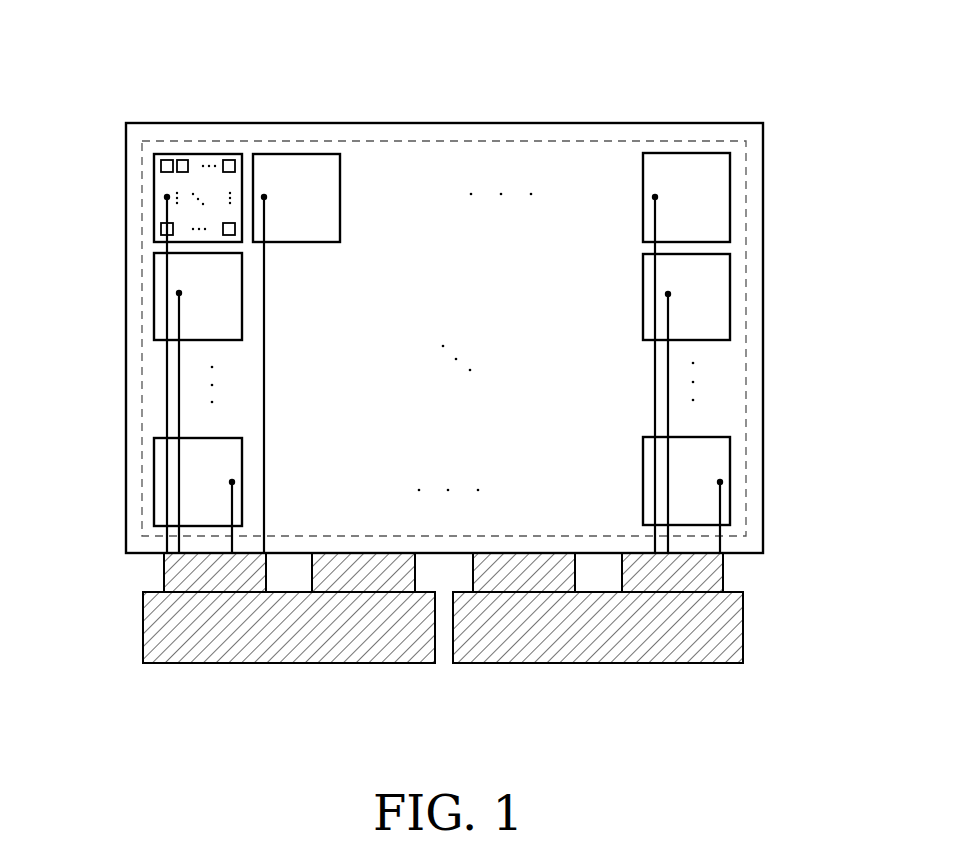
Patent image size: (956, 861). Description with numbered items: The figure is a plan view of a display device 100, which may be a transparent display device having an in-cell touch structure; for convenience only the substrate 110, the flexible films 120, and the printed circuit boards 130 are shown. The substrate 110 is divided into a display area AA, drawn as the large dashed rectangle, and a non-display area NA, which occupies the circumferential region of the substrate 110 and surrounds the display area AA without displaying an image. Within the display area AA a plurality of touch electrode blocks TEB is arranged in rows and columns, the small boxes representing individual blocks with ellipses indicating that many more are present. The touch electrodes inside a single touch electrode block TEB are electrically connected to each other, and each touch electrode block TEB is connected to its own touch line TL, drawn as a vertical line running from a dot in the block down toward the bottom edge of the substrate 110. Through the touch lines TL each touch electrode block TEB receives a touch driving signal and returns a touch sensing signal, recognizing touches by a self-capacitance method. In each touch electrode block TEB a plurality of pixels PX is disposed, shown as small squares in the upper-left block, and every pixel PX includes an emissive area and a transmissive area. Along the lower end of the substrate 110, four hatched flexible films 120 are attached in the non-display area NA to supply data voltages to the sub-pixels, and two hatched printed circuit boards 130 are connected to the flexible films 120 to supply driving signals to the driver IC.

The display device 100 is at (718, 36).
The substrate 110 is at (763, 327).
The flexible film 120 is at (360, 573).
The printed circuit board 130 is at (480, 650).
The display area AA is at (740, 450).
The non-display area NA is at (747, 404).
The pixel PX is at (182, 158).
The touch electrode block TEB is at (285, 152).
The touch line TL is at (262, 422).